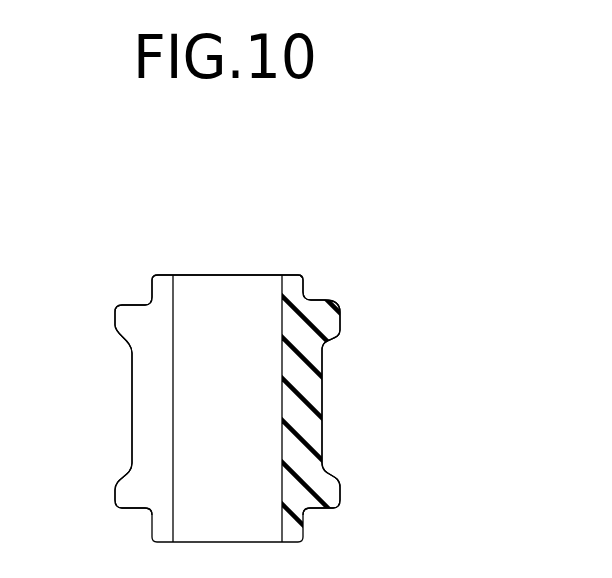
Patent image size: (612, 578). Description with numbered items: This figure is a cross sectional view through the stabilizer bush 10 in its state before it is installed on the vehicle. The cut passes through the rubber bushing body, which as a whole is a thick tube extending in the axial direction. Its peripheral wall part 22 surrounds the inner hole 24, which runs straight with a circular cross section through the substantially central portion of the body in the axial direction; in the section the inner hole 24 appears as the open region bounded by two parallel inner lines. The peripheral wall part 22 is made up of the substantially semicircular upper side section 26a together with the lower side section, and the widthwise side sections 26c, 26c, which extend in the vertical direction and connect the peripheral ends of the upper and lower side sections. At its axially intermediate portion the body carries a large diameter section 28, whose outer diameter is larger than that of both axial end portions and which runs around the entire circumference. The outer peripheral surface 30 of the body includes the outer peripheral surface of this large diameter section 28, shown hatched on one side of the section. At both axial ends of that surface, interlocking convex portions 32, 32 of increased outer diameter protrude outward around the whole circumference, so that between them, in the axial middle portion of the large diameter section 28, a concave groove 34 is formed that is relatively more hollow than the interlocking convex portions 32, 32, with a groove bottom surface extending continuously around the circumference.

The stabilizer bush 10 is at (352, 248).
The peripheral wall part 22 is at (162, 264).
The inner hole 24 is at (282, 308).
The upper side section 26a is at (217, 323).
The widthwise side section 26c is at (148, 403).
The large diameter section 28 is at (329, 298).
The outer peripheral surface 30 is at (323, 430).
The interlocking convex portion 32 is at (122, 320).
The concave groove 34 is at (128, 476).